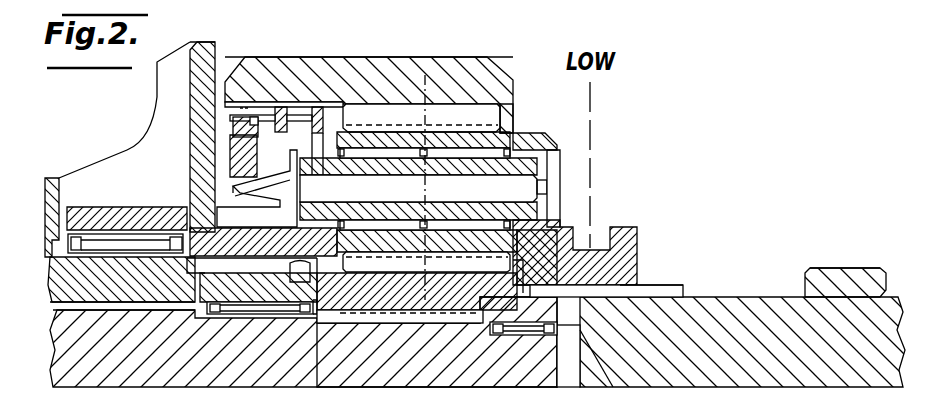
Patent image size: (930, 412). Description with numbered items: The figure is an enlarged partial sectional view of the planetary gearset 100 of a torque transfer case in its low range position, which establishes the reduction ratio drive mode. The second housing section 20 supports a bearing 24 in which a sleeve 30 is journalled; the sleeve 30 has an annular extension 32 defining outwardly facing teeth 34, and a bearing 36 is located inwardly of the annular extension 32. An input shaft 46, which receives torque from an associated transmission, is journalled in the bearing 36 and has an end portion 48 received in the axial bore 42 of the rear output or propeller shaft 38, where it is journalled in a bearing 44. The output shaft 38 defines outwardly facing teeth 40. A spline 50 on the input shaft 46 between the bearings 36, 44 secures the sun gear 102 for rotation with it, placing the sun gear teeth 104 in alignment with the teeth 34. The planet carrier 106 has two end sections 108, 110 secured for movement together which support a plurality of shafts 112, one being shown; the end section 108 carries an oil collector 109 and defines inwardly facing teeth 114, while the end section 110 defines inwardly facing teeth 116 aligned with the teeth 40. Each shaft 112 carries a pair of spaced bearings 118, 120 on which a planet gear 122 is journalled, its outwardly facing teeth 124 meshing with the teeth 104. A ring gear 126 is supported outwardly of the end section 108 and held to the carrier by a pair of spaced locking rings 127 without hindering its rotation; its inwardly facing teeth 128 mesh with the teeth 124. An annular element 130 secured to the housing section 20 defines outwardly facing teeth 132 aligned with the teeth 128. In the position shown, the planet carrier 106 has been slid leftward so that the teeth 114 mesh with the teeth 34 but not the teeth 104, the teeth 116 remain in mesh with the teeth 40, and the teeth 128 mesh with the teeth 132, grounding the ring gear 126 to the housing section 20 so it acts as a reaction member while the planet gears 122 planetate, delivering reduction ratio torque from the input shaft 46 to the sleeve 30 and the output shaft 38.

The second housing section 20 is at (205, 42).
The bearing 24 is at (97, 240).
The sleeve 30 is at (80, 294).
The annular extension 32 is at (225, 272).
The outwardly facing teeth 34 is at (291, 294).
The bearing 36 is at (260, 312).
The rear output or propeller shaft 38 is at (768, 297).
The outwardly facing teeth 40 is at (673, 293).
The axial bore 42 is at (580, 331).
The bearing 44 is at (517, 338).
The input shaft 46 is at (303, 342).
The end portion 48 is at (437, 342).
The spline 50 is at (385, 320).
The planetary gearset 100 is at (531, 72).
The sun gear 102 is at (371, 303).
The teeth 104 is at (338, 297).
The planet carrier 106 is at (568, 162).
The end section 108 is at (207, 227).
The oil collector 109 is at (227, 183).
The end section 110 is at (563, 233).
The shaft 112 is at (563, 177).
The inwardly facing teeth 114 is at (227, 262).
The inwardly facing teeth 116 is at (664, 285).
The bearing 118 is at (393, 137).
The bearing 120 is at (490, 150).
The planet gear 122 is at (477, 133).
The outwardly facing teeth 124 is at (447, 113).
The ring gear 126 is at (333, 105).
The locking rings 127 is at (282, 107).
The inwardly facing teeth 128 is at (330, 107).
The annular element 130 is at (230, 136).
The outwardly facing teeth 132 is at (232, 120).